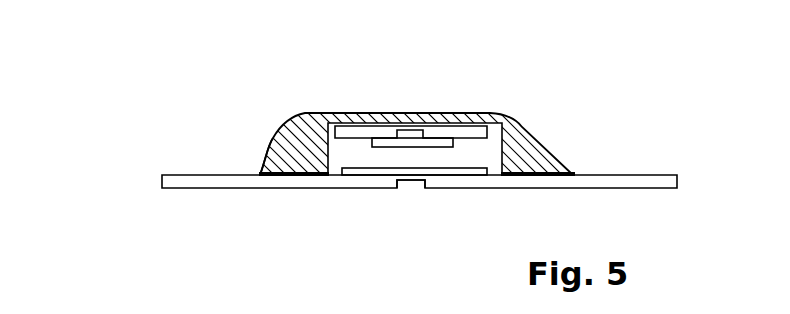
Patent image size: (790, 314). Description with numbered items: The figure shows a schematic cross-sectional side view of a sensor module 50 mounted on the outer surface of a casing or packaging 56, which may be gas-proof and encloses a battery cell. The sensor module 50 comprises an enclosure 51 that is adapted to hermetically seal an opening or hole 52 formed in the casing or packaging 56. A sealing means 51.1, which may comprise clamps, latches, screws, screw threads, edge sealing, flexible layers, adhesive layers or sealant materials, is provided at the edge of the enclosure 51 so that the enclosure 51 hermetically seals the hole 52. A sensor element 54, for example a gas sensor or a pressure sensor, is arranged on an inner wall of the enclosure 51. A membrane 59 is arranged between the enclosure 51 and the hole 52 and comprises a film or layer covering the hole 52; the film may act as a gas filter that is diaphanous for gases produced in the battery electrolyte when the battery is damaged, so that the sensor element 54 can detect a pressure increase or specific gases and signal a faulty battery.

The sensor module 50 is at (262, 84).
The enclosure 51 is at (533, 136).
The sealing means 51.1 is at (258, 170).
The opening or hole 52 is at (412, 186).
The sensor element 54 is at (446, 141).
The casing or packaging 56 is at (679, 180).
The membrane 59 is at (375, 170).